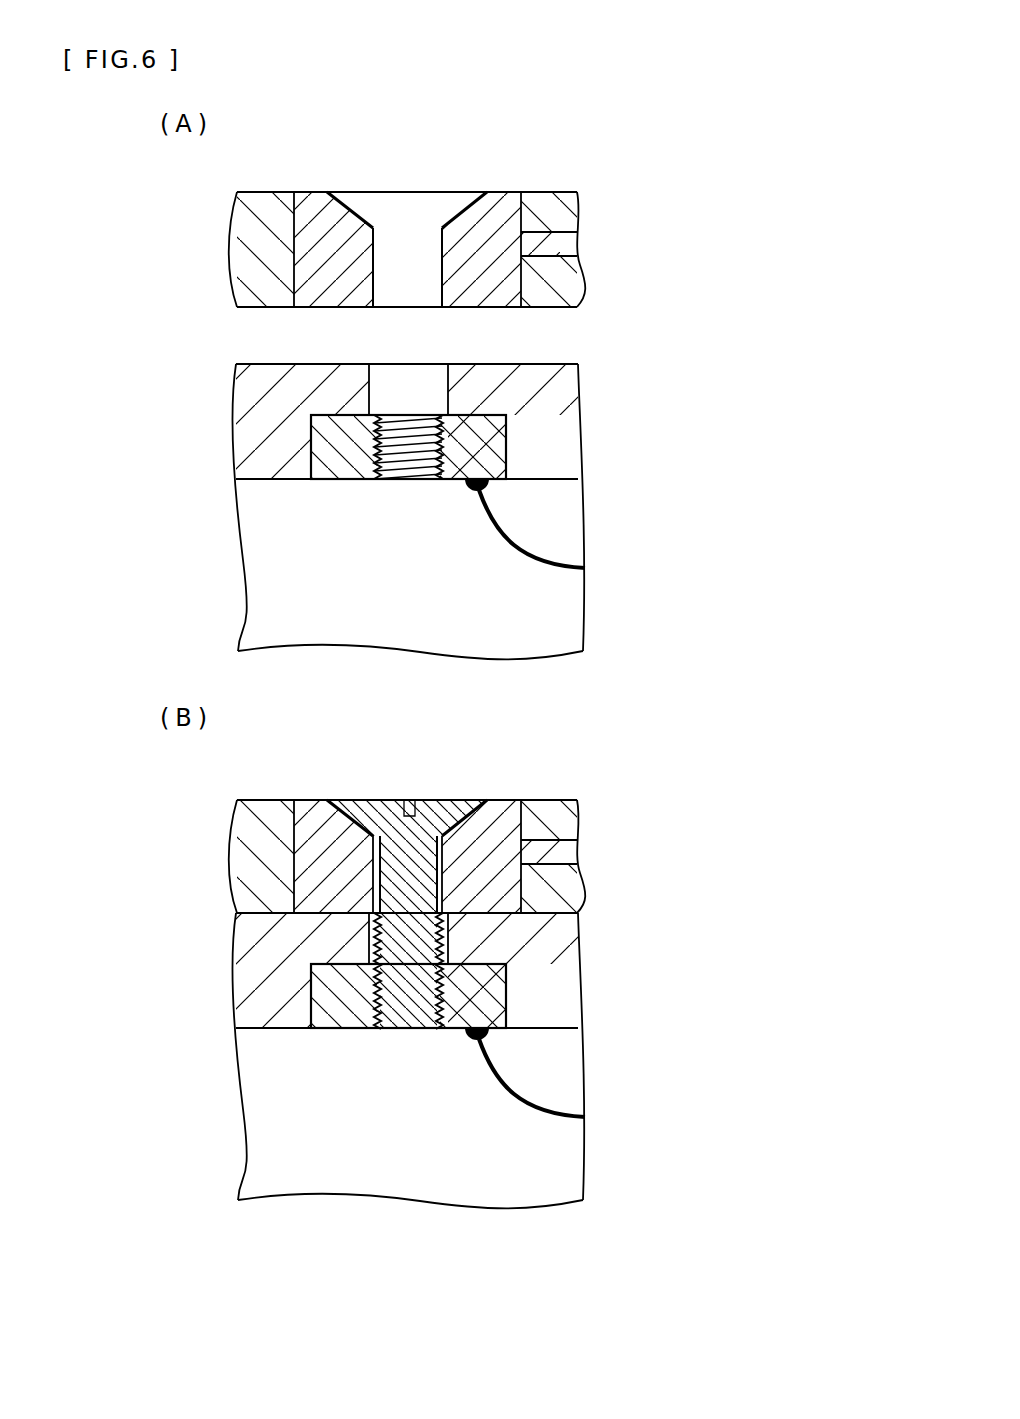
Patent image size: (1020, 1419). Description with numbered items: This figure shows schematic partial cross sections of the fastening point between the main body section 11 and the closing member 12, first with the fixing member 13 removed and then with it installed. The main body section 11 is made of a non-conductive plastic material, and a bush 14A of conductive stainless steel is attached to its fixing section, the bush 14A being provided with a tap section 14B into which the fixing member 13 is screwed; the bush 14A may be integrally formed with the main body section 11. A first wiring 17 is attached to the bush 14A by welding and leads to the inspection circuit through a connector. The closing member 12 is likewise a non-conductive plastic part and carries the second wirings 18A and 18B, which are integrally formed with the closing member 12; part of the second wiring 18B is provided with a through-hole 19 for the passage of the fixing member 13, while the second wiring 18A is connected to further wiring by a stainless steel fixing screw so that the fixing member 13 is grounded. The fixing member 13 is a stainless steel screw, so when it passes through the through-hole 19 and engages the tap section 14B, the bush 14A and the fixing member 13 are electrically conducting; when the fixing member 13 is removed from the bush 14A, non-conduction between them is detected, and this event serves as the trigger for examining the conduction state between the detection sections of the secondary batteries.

The main body section 11 is at (600, 396).
The closing member 12 is at (543, 185).
The fixing member 13 is at (400, 800).
The bush 14A is at (493, 436).
The tap section 14B is at (447, 438).
The first wiring 17 is at (553, 567).
The second wiring 18A is at (555, 240).
The second wiring 18B is at (492, 212).
The through-hole 19 is at (404, 248).